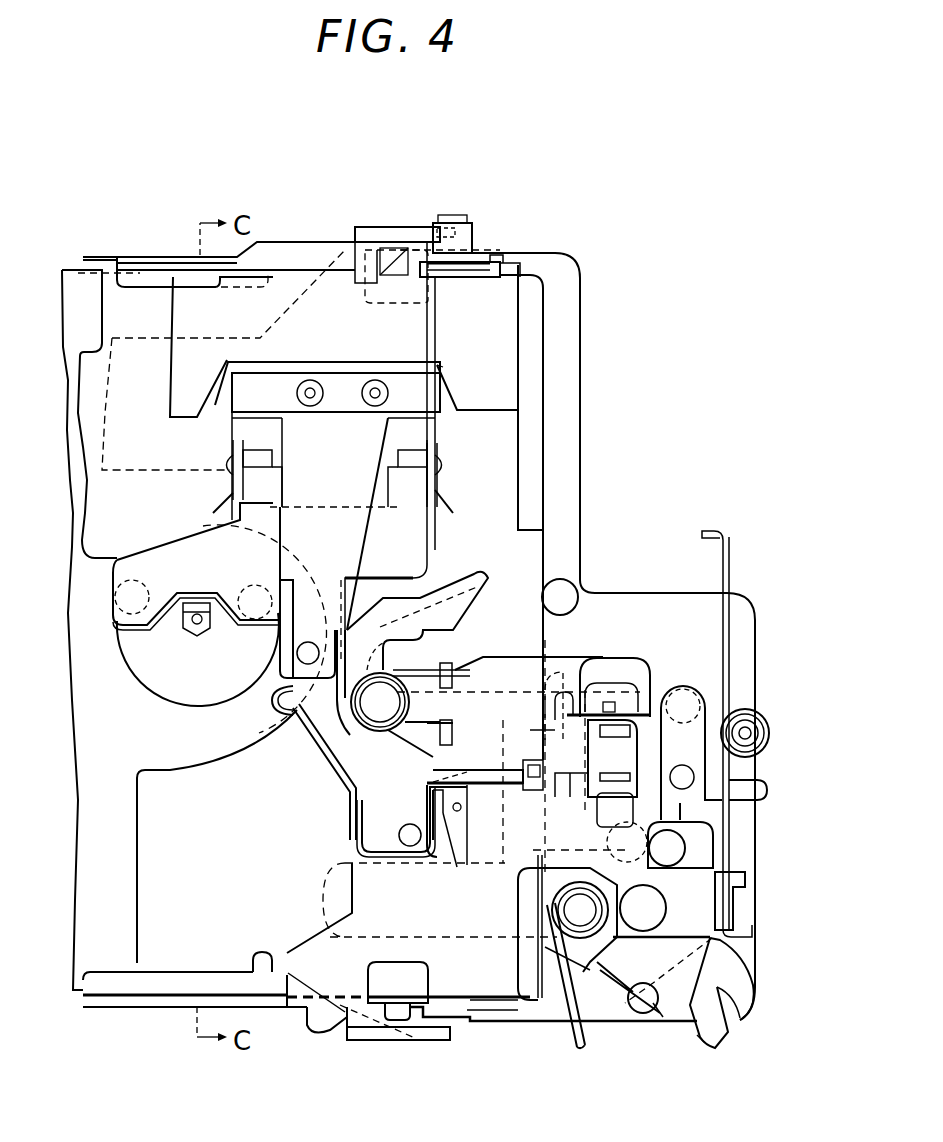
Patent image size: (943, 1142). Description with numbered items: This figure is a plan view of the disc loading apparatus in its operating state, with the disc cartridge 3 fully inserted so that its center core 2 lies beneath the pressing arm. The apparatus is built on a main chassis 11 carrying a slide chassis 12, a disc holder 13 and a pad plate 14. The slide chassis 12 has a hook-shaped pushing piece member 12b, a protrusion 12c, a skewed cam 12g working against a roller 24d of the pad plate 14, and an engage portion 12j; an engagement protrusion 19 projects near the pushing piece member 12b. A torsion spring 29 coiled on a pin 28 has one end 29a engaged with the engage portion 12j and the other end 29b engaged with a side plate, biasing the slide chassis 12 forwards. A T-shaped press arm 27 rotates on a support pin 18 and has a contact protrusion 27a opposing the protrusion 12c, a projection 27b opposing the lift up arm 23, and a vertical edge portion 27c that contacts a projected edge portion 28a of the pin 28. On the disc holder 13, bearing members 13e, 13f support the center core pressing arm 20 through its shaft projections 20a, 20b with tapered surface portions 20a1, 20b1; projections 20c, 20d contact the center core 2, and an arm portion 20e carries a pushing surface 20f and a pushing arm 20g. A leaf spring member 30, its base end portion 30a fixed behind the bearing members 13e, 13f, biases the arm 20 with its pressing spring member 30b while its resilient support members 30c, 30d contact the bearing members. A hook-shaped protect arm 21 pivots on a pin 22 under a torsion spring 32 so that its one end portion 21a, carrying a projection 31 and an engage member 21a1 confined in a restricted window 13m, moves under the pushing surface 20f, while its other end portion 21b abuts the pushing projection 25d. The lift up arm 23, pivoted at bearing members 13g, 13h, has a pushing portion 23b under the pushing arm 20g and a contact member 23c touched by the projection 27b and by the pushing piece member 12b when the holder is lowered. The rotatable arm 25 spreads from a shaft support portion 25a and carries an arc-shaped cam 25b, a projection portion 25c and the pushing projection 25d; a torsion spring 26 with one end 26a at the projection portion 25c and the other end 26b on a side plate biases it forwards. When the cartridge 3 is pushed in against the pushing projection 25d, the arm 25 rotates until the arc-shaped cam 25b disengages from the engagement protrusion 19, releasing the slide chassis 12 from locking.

The center core 2 is at (155, 677).
The disc cartridge 3 is at (84, 740).
The main chassis 11 is at (580, 363).
The slide chassis 12 is at (722, 845).
The hook-shaped pushing piece member 12b is at (720, 940).
The protrusion 12c is at (563, 680).
The skewed cam 12g is at (363, 227).
The engage portion 12j is at (757, 876).
The disc holder 13 is at (543, 395).
The bearing member 13e is at (237, 437).
The bearing member 13f is at (440, 450).
The bearing member 13g is at (597, 800).
The bearing member 13h is at (640, 672).
The restricted window 13m is at (455, 835).
The pad plate 14 is at (523, 317).
The support pin 18 is at (740, 827).
The engagement protrusion 19 is at (752, 990).
The center core pressing arm 20 is at (173, 560).
The shaft projection 20a is at (227, 457).
The tapered surface portion 20a1 is at (227, 455).
The shaft projection 20b is at (440, 474).
The tapered surface portion 20b1 is at (440, 462).
The projection 20c is at (118, 563).
The projection 20d is at (232, 633).
The arm portion 20e is at (307, 733).
The pushing surface 20f is at (370, 818).
The pushing arm 20g is at (460, 803).
The protect arm 21 is at (433, 743).
The one end portion 21a is at (440, 840).
The engage member 21a1 is at (458, 867).
The other end portion 21b is at (473, 597).
The pin 22 is at (367, 737).
The lift up arm 23 is at (627, 763).
The pushing portion 23b is at (527, 733).
The contact member 23c is at (560, 850).
The roller 24d is at (473, 235).
The rotatable arm 25 is at (577, 622).
The shaft support portion 25a is at (553, 903).
The arc-shaped cam 25b is at (745, 1017).
The projection portion 25c is at (697, 1035).
The pushing projection 25d is at (567, 583).
The torsion spring 26 is at (553, 903).
The one end 26a is at (617, 1025).
The other end 26b is at (567, 1003).
The T-shaped press arm 27 is at (707, 713).
The contact protrusion 27a is at (683, 687).
The projection 27b is at (705, 800).
The vertical edge portion 27c is at (692, 783).
The pin 28 is at (747, 733).
The projected edge portion 28a is at (767, 780).
The torsion spring 29 is at (767, 733).
The one end 29a is at (752, 895).
The other end 29b is at (733, 540).
The leaf spring member 30 is at (295, 423).
The base end portion 30a is at (360, 385).
The pressing spring member 30b is at (253, 552).
The resilient support member 30c is at (233, 483).
The resilient support member 30d is at (437, 495).
The projection 31 is at (397, 838).
The torsion spring 32 is at (412, 670).